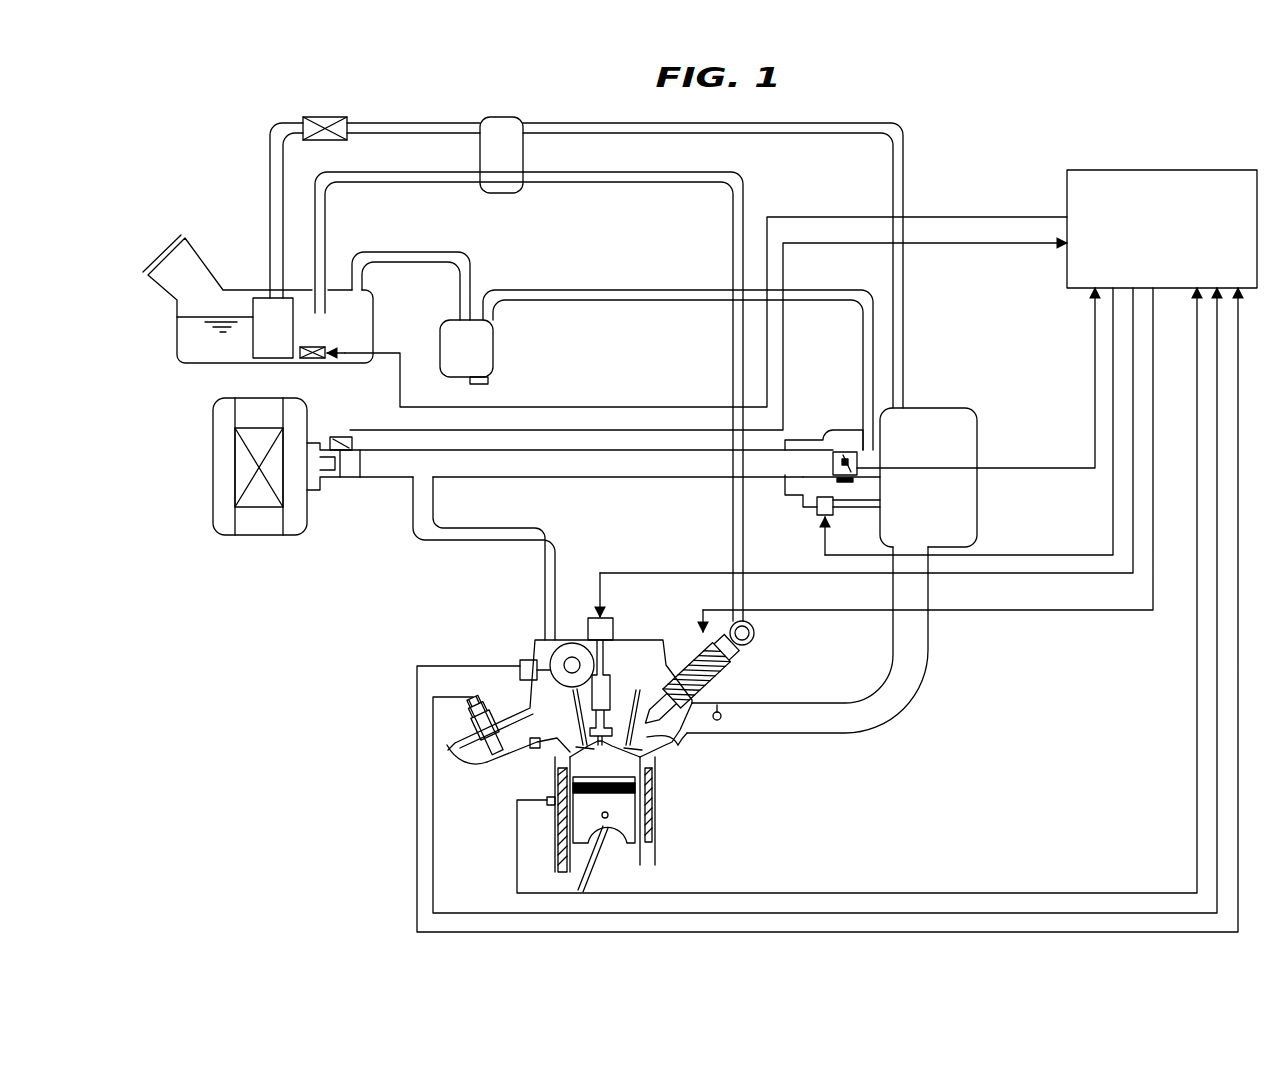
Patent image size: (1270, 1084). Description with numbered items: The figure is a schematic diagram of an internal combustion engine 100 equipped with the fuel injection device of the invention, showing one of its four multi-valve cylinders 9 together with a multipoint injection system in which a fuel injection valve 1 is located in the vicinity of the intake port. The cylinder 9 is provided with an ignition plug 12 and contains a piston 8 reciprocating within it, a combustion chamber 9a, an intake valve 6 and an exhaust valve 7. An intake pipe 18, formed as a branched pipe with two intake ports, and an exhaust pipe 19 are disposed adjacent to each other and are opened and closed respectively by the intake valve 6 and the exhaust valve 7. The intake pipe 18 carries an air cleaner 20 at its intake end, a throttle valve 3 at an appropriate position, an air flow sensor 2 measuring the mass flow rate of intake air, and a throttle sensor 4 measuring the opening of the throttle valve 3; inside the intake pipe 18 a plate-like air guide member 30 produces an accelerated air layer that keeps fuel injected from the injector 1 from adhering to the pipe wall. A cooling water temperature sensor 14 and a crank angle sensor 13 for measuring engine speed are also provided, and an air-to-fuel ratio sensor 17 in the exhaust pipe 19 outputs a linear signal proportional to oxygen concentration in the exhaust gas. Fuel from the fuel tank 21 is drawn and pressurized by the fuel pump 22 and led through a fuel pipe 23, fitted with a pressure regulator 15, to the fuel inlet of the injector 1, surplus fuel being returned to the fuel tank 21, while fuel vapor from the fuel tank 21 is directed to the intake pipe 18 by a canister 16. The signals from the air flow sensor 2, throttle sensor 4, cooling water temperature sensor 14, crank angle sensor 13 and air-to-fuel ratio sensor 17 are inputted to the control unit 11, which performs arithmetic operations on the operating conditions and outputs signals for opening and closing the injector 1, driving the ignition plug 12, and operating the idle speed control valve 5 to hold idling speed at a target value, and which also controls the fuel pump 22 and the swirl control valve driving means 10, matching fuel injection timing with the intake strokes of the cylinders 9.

The internal combustion engine 100 is at (953, 170).
The fuel injection valve 1 is at (700, 678).
The air flow sensor 2 is at (342, 438).
The throttle valve 3 is at (860, 462).
The throttle sensor 4 is at (853, 480).
The idle speed control valve 5 is at (818, 515).
The intake valve 6 is at (617, 765).
The exhaust valve 7 is at (557, 765).
The piston 8 is at (655, 815).
The cylinder 9 is at (605, 845).
The combustion chamber 9a is at (625, 800).
The swirl control valve driving means 10 is at (735, 705).
The control unit 11 is at (1153, 170).
The ignition plug 12 is at (615, 735).
The crank angle sensor 13 is at (520, 662).
The cooling water temperature sensor 14 is at (548, 805).
The pressure regulator 15 is at (503, 117).
The canister 16 is at (498, 352).
The air-to-fuel ratio sensor 17 is at (470, 720).
The intake pipe 18 is at (770, 735).
The exhaust pipe 19 is at (490, 765).
The air cleaner 20 is at (265, 497).
The fuel tank 21 is at (182, 378).
The fuel pump 22 is at (273, 345).
The fuel pipe 23 is at (635, 183).
The air guide member 30 is at (700, 745).